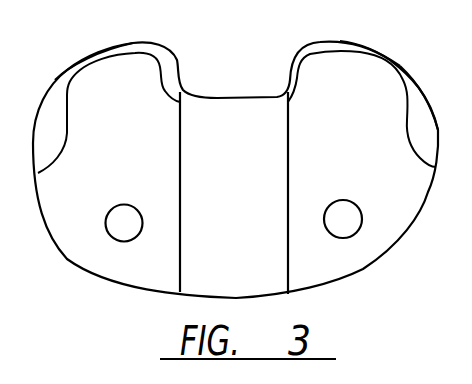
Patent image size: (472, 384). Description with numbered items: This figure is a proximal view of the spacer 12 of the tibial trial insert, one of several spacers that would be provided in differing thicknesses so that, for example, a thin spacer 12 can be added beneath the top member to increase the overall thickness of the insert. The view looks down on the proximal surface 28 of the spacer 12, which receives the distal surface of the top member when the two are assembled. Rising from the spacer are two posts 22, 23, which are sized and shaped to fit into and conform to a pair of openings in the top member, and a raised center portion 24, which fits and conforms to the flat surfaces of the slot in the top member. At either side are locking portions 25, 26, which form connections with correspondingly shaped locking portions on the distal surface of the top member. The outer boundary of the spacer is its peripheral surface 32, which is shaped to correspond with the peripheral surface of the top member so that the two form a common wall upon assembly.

The spacer 12 is at (132, 42).
The post 22 is at (127, 225).
The post 23 is at (354, 228).
The raised center portion 24 is at (243, 226).
The locking portion 25 is at (74, 63).
The locking portion 26 is at (414, 38).
The proximal surface 28 is at (130, 132).
The peripheral surface 32 is at (422, 84).